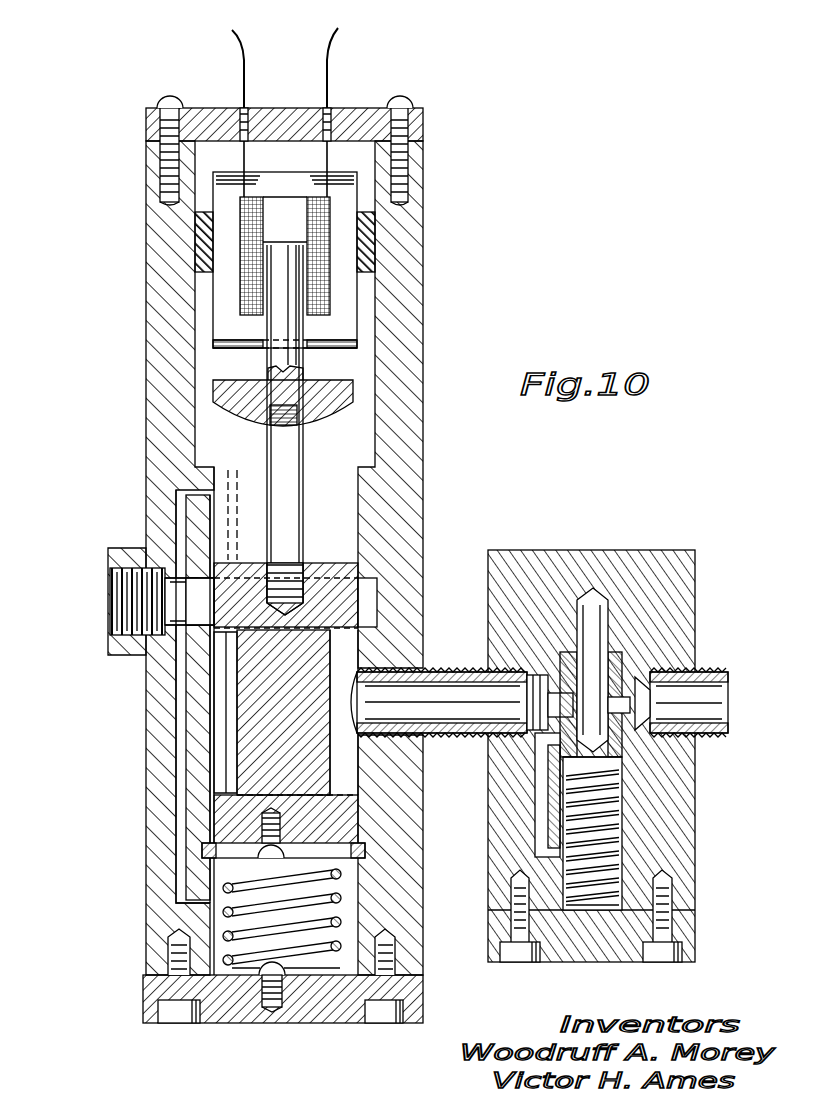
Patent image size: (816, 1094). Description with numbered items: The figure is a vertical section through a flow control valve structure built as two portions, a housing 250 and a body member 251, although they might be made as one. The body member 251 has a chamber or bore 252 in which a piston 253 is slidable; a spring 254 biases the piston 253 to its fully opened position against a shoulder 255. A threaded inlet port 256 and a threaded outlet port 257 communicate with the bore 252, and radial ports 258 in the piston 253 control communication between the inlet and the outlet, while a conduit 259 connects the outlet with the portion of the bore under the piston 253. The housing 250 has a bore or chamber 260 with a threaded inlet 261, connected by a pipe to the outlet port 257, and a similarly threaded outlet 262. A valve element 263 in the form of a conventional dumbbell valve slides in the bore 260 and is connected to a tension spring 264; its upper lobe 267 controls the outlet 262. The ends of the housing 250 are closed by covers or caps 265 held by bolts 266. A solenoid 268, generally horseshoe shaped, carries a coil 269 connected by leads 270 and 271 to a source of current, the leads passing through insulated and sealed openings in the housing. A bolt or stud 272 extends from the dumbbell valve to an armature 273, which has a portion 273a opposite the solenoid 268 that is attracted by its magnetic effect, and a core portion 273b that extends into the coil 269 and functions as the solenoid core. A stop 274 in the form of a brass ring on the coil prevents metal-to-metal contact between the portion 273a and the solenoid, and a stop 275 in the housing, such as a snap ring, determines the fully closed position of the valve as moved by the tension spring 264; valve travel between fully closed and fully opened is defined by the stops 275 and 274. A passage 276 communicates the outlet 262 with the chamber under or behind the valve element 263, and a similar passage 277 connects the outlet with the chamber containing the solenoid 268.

The housing 250 is at (147, 780).
The body member 251 is at (498, 812).
The chamber or bore 252 is at (620, 787).
The piston 253 is at (617, 660).
The spring 254 is at (600, 840).
The shoulder 255 is at (562, 660).
The threaded inlet port 256 is at (655, 672).
The threaded outlet port 257 is at (520, 733).
The radial ports 258 is at (618, 705).
The conduit 259 is at (538, 782).
The bore or chamber 260 is at (214, 717).
The threaded inlet 261 is at (365, 670).
The threaded outlet 262 is at (128, 612).
The valve element 263 is at (238, 742).
The tension spring 264 is at (226, 913).
The covers or caps 265 is at (283, 108).
The bolts 266 is at (165, 118).
The upper lobe 267 is at (362, 600).
The solenoid 268 is at (352, 206).
The coil 269 is at (300, 298).
The lead 270 is at (333, 75).
The lead 271 is at (241, 82).
The bolt or stud 272 is at (292, 522).
The armature 273 is at (250, 424).
The armature portion 273a is at (340, 400).
The core portion 273b is at (292, 290).
The stop 274 is at (216, 345).
The stop 275 is at (367, 851).
The passage 276 is at (180, 815).
The passage 277 is at (186, 517).